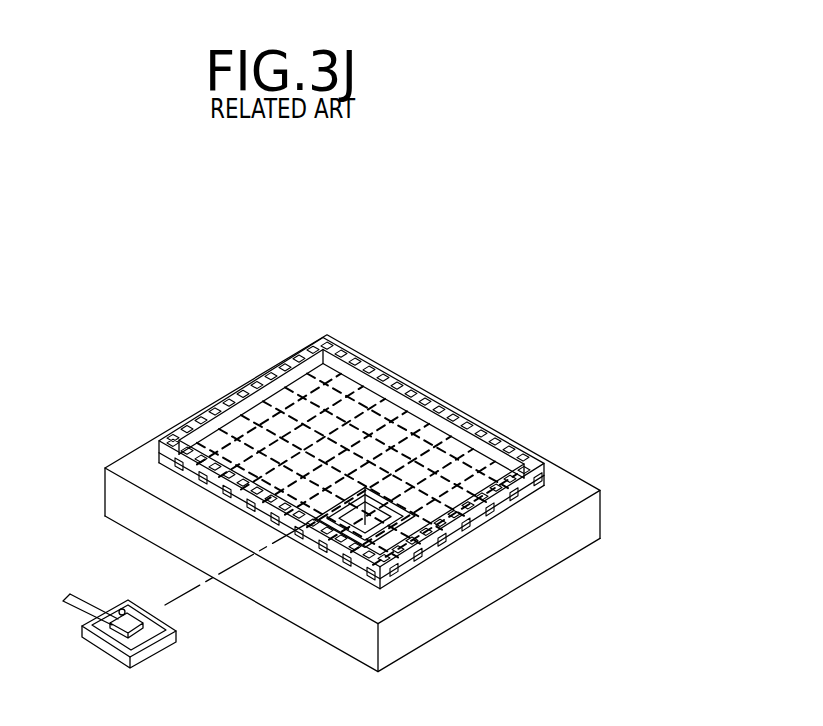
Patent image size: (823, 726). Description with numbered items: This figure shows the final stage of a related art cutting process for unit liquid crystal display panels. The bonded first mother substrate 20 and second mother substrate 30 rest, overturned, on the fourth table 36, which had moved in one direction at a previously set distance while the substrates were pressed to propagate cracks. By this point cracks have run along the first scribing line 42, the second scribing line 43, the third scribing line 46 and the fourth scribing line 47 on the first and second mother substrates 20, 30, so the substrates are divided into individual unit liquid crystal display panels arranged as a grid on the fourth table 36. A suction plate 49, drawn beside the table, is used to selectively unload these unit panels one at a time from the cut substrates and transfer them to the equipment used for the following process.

The first mother substrate 20 is at (156, 441).
The second mother substrate 30 is at (158, 462).
The fourth table 36 is at (341, 634).
The first scribing line 42 is at (372, 418).
The second scribing line 43 is at (340, 418).
The third scribing line 46 is at (246, 396).
The fourth scribing line 47 is at (278, 420).
The suction plate 49 is at (134, 622).